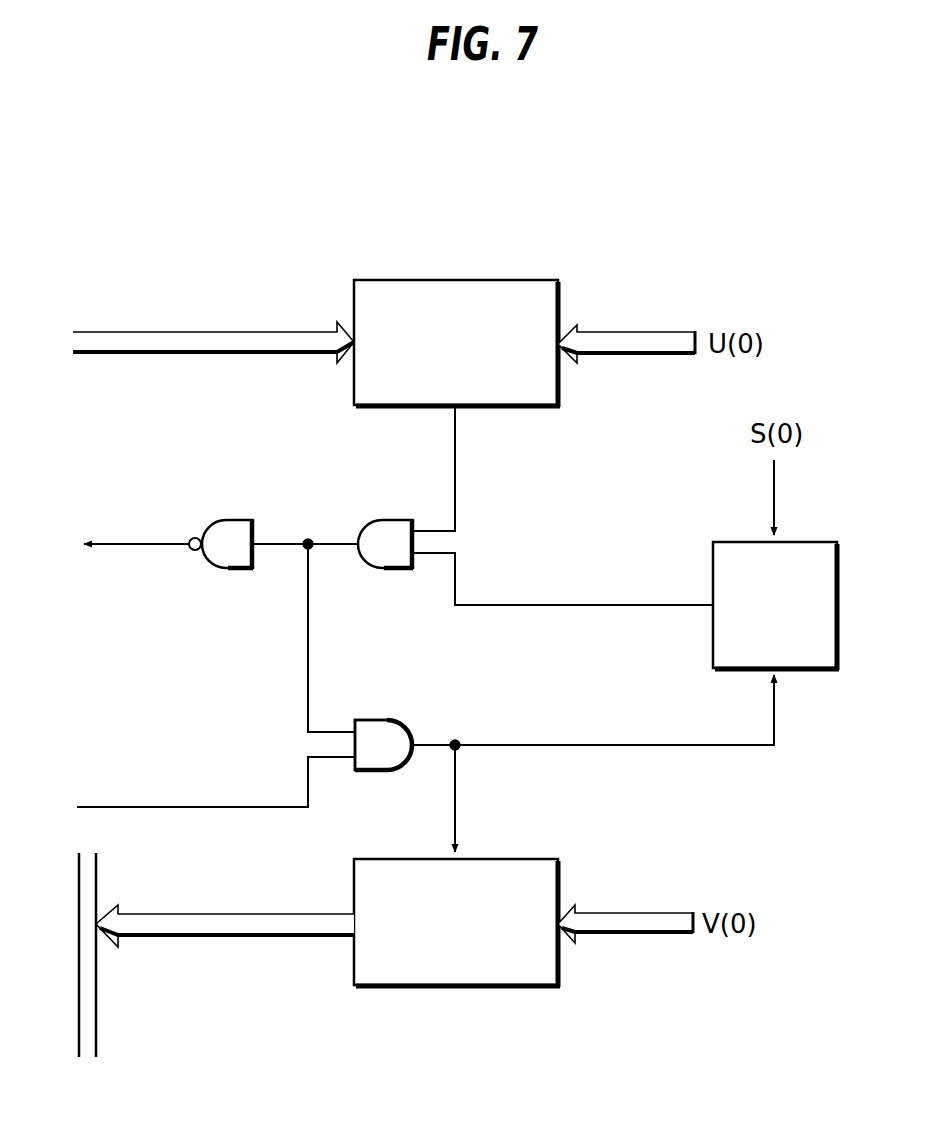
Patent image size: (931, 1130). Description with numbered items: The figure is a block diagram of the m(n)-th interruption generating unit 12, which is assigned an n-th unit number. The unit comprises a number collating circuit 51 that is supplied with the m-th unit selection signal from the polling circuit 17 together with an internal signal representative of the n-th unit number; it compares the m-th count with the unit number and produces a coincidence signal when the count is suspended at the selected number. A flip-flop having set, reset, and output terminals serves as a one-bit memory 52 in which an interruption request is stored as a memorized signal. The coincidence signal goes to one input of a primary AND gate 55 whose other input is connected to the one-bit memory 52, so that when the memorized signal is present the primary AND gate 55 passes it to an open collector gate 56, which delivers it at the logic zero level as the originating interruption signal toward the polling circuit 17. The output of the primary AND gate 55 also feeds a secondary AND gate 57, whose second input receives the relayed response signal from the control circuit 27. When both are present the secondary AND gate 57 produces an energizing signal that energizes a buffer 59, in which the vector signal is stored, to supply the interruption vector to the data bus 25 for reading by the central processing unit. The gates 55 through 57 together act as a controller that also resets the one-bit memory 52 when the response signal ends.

The number collating circuit 51 is at (458, 280).
The one-bit memory 52 is at (713, 583).
The primary AND gate 55 is at (386, 520).
The open collector gate 56 is at (228, 520).
The secondary AND gate 57 is at (376, 720).
The buffer 59 is at (511, 859).
The data bus 25 is at (97, 988).
The interruption generating unit 12 is at (686, 1012).
The polling circuit 17 is at (203, 328).
The control circuit 27 is at (204, 782).